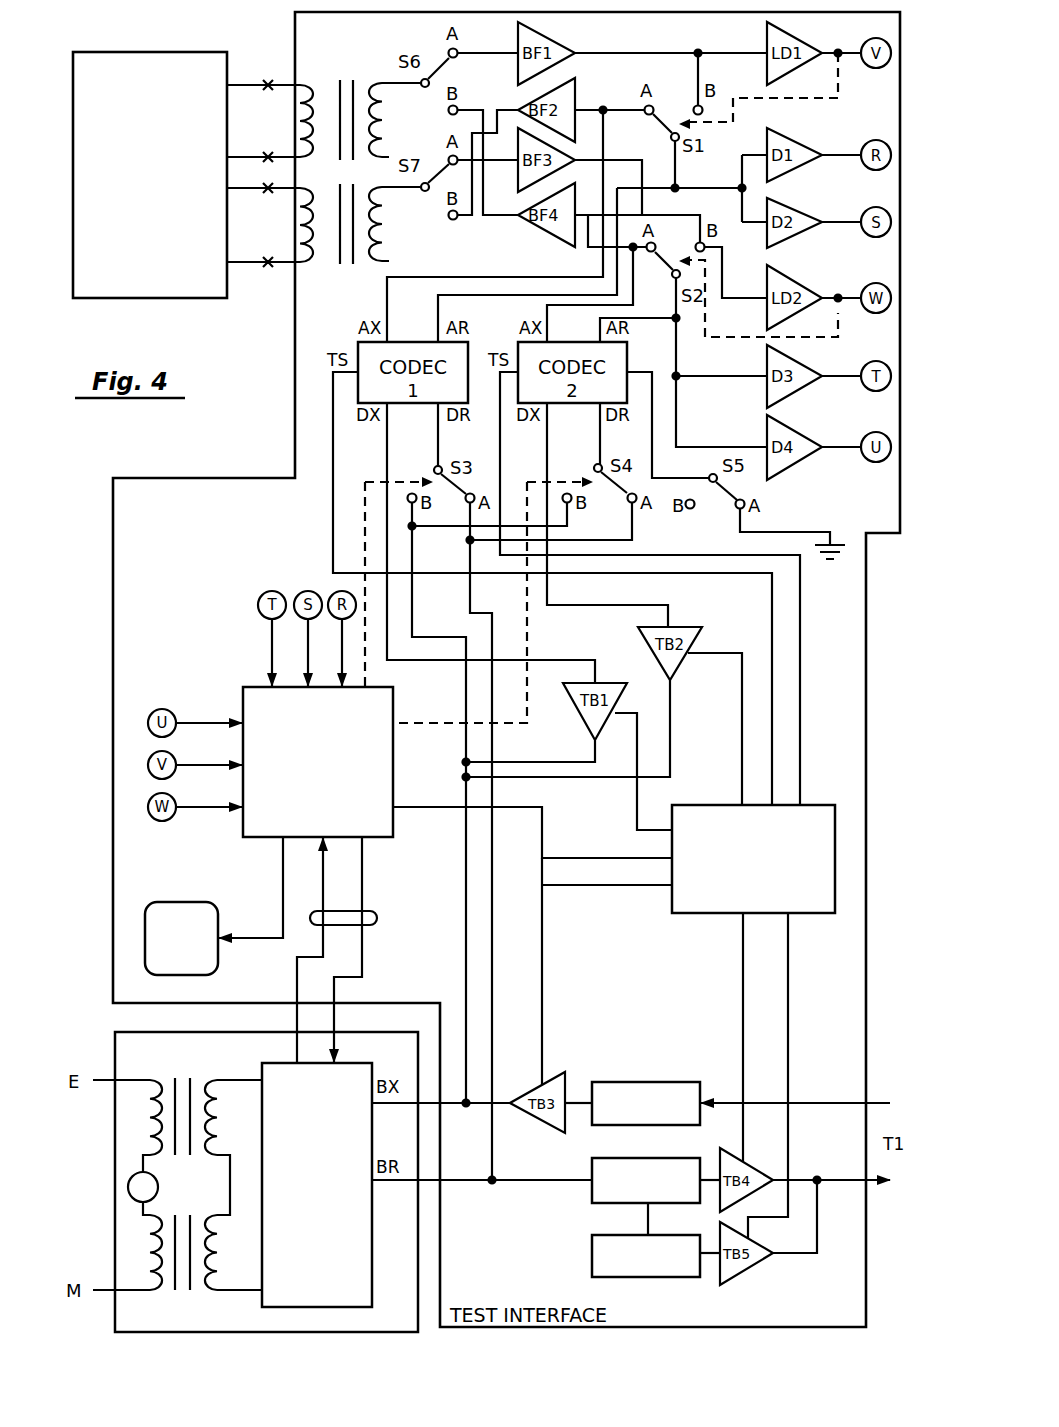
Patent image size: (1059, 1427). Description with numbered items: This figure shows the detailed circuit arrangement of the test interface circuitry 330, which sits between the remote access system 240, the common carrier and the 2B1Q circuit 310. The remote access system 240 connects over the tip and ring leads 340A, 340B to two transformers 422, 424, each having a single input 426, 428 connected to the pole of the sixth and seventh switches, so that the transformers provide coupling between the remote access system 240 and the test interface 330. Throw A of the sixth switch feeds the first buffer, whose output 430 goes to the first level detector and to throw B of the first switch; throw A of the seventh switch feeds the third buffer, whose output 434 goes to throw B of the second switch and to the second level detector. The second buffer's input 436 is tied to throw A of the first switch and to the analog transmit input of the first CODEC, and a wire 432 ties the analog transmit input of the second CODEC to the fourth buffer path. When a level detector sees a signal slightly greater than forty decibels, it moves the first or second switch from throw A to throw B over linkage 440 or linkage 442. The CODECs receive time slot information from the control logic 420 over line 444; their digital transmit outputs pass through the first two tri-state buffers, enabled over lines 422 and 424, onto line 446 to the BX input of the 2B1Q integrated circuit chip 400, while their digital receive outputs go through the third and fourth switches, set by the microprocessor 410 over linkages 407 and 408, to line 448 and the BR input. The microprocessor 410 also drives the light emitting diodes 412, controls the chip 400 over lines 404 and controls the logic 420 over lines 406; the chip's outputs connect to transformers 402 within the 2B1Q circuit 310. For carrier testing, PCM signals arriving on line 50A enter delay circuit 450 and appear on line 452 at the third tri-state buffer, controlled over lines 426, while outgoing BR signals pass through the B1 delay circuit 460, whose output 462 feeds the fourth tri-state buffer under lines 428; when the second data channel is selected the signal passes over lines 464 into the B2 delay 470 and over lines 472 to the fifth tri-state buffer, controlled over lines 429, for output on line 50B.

The remote access system 240 is at (175, 298).
The test interface circuitry 330 is at (295, 448).
The tip and ring line pair 340A is at (268, 254).
The tip and ring line pair 340B is at (268, 151).
The transformer 422 is at (358, 62).
The transformer 424 is at (360, 270).
The transformer input 426 is at (416, 86).
The transformer input 428 is at (416, 190).
The control line 429 is at (788, 958).
The buffer output line 430 is at (640, 54).
The line 432 is at (650, 300).
The buffer output line 434 is at (661, 162).
The buffer input line 436 is at (638, 111).
The linkage 440 is at (800, 104).
The linkage 442 is at (756, 335).
The time slot line 444 is at (333, 525).
The BX line 446 is at (466, 980).
The BR line 448 is at (492, 966).
The switch control line 407 is at (411, 481).
The switch control line 408 is at (527, 640).
The control lines 406 is at (597, 858).
The microprocessor 410 is at (400, 822).
The light emitting diodes 412 is at (166, 902).
The control lines 404 is at (378, 920).
The control logic 420 is at (672, 913).
The 2B1Q circuit 310 is at (115, 1194).
The transformers 402 is at (203, 1077).
The 2B1Q integrated circuit chip 400 is at (297, 1290).
The delay circuit 450 is at (642, 1082).
The delayed PCM line 452 is at (578, 1088).
The B1 delay circuit 460 is at (642, 1158).
The B1 delay output line 462 is at (709, 1177).
The B2 line 464 is at (648, 1223).
The B2 delay 470 is at (592, 1260).
The B2 delay output line 472 is at (706, 1258).
The PCM input line 50A is at (838, 1102).
The PCM output line 50B is at (845, 1168).